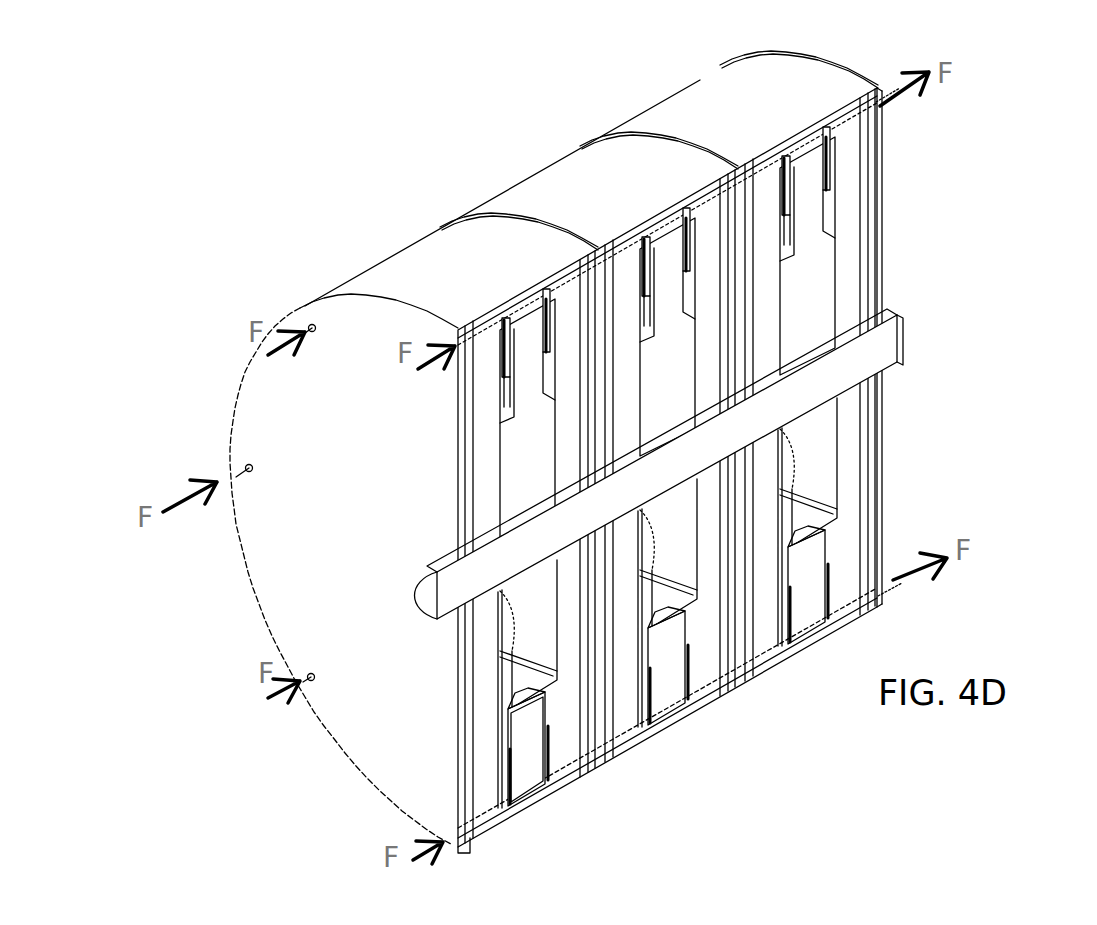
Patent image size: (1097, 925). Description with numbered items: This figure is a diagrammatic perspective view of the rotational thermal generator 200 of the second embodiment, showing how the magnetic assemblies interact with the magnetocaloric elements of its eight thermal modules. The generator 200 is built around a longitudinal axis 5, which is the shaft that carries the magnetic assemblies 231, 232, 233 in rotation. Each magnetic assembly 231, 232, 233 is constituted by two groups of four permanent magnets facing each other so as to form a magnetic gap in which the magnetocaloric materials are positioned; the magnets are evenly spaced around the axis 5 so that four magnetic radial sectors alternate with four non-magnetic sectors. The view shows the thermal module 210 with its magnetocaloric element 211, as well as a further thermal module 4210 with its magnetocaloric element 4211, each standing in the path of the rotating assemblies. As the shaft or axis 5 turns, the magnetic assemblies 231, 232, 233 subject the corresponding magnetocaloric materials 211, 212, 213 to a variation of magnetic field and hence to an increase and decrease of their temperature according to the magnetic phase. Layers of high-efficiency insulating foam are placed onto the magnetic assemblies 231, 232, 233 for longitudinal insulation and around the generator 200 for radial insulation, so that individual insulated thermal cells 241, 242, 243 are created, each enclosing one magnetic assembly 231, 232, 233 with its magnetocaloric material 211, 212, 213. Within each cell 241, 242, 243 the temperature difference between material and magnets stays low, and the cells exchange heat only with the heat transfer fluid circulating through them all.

The thermal generator 200 is at (1020, 103).
The thermal module 210 is at (440, 383).
The magnetocaloric element 211 is at (522, 362).
The magnetocaloric material 212 is at (670, 295).
The magnetocaloric material 213 is at (813, 203).
The magnetic assembly 231 is at (558, 347).
The magnetic assembly 232 is at (708, 258).
The magnetic assembly 233 is at (848, 170).
The thermal insulating cell 241 is at (403, 267).
The thermal insulating cell 242 is at (533, 197).
The thermal insulating cell 243 is at (833, 80).
The longitudinal axis 5 is at (888, 342).
The thermal module 4210 is at (488, 746).
The magnetocaloric element 4211 is at (525, 752).